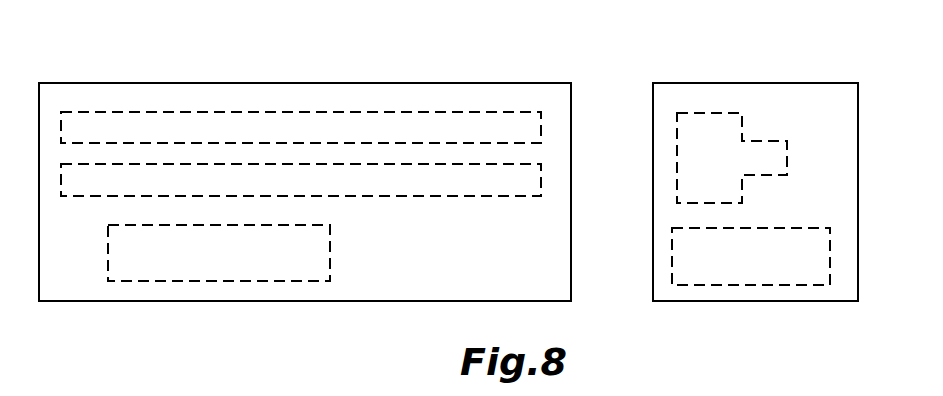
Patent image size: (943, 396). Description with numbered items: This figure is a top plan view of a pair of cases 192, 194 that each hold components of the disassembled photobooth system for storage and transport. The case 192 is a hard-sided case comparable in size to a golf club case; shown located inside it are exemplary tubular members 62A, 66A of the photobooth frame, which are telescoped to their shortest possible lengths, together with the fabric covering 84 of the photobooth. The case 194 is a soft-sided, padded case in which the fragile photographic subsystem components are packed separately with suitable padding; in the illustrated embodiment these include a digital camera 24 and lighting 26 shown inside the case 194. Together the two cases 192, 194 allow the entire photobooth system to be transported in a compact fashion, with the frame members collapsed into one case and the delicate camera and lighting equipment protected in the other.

The case 192 is at (297, 88).
The case 194 is at (757, 82).
The tubular member 62A is at (78, 125).
The tubular member 66A is at (510, 185).
The fabric covering 84 is at (173, 253).
The digital camera 24 is at (708, 167).
The lighting 26 is at (722, 257).